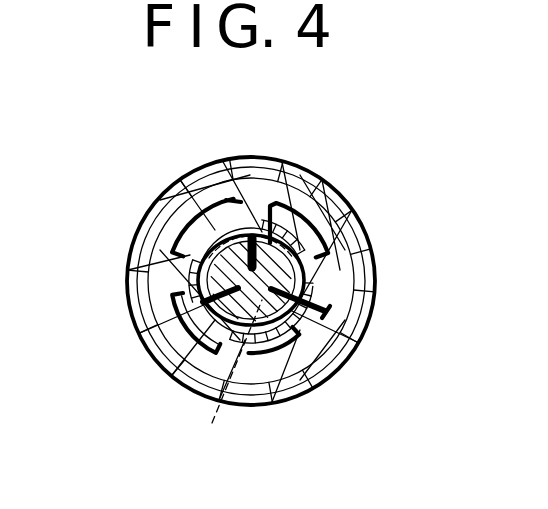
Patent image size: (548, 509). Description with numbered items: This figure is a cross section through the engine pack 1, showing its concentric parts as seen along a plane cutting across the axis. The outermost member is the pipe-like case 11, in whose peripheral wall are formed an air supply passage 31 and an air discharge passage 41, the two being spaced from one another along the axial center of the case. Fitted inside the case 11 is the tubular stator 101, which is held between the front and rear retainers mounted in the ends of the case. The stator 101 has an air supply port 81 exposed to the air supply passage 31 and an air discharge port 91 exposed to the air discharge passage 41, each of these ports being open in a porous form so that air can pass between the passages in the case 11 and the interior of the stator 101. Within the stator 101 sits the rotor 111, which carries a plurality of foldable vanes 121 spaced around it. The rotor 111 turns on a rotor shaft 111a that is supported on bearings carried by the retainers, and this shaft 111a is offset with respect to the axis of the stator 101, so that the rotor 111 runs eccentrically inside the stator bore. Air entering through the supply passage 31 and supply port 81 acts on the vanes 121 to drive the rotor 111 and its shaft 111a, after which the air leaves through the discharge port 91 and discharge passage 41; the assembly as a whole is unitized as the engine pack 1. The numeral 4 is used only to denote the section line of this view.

The engine pack 1 is at (290, 192).
The housing 4 is at (365, 271).
The pipe-like case 11 is at (338, 337).
The air supply passage 31 is at (310, 220).
The air discharge passage 41 is at (215, 187).
The air supply port 81 is at (350, 245).
The air discharge port 91 is at (165, 335).
The tubular stator 101 is at (360, 293).
The rotor 111 is at (158, 268).
The rotor shaft 111a is at (222, 381).
The foldable vanes 121 is at (262, 232).